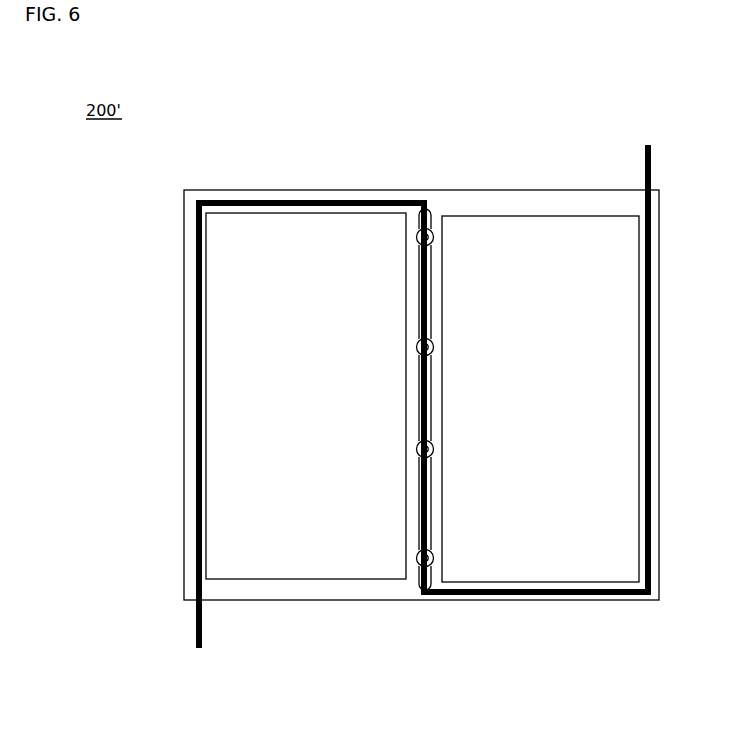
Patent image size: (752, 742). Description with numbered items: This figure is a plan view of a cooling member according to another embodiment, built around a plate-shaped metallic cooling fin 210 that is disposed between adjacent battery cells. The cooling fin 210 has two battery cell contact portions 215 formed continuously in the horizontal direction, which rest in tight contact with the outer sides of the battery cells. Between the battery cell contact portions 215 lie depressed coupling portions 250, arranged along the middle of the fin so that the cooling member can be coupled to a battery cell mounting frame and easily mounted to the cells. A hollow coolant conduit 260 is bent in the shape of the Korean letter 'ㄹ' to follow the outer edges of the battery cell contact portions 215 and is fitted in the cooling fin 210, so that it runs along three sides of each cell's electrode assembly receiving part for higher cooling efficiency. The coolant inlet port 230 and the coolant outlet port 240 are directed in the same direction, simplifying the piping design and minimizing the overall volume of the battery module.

The cooling fin 210 is at (382, 597).
The battery cell contact portion 215 is at (511, 571).
The coolant inlet port 230 is at (200, 650).
The coolant outlet port 240 is at (645, 147).
The depressed coupling portion 250 is at (433, 228).
The coolant conduit 260 is at (197, 359).